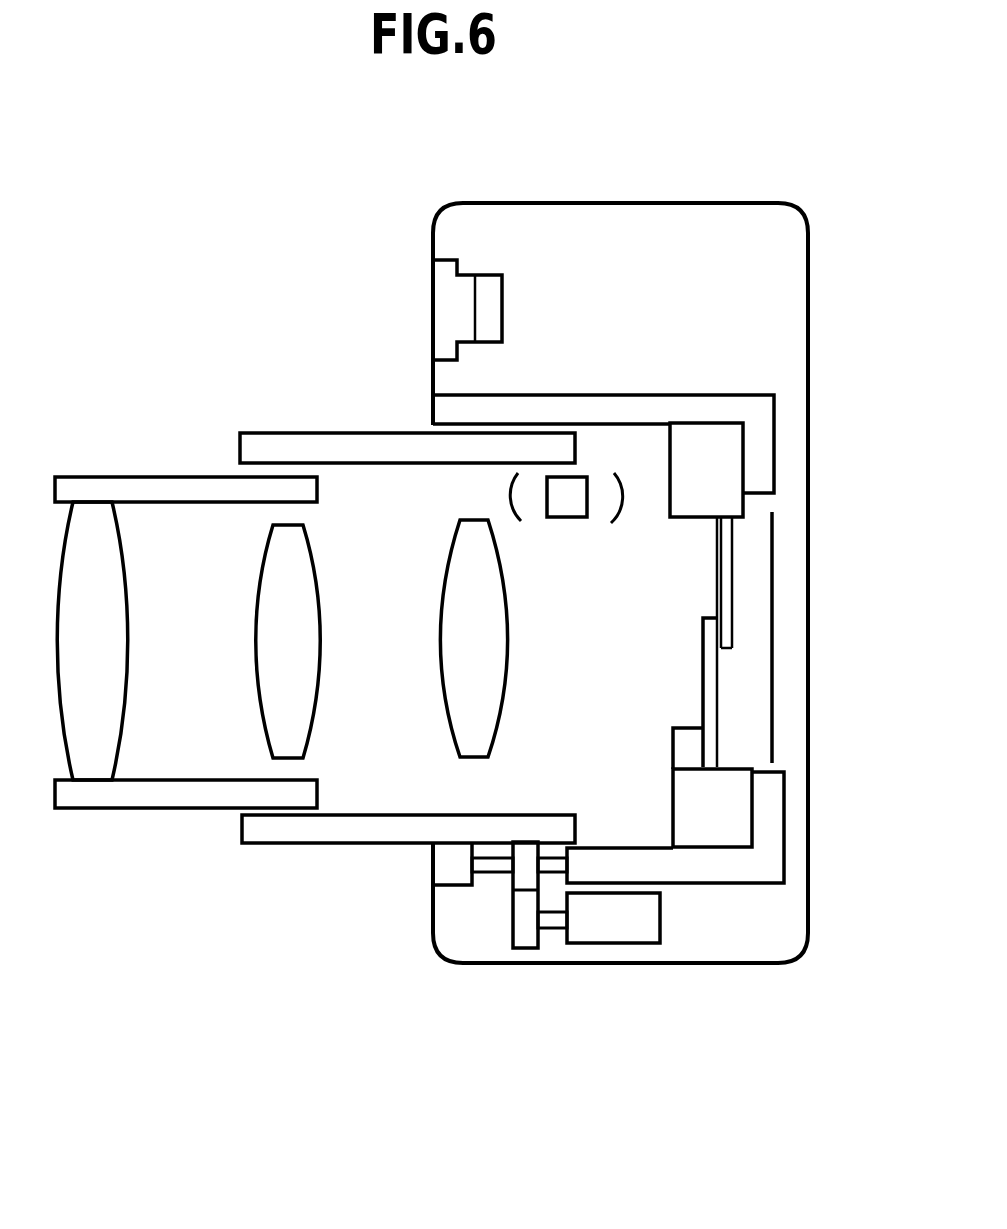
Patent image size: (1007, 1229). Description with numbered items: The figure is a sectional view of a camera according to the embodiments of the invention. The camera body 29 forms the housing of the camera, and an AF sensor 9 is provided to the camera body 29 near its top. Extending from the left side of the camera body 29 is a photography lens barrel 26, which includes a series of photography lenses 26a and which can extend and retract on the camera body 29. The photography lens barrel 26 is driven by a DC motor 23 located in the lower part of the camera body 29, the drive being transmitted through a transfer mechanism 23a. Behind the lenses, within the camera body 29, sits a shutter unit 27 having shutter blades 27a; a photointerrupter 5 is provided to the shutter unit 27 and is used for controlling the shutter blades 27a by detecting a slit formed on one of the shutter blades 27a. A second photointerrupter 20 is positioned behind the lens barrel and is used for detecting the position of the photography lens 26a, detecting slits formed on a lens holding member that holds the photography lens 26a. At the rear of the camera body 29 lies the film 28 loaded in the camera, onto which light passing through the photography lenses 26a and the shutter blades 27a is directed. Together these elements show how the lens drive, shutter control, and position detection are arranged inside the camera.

The camera body 29 is at (633, 203).
The AF sensor 9 is at (487, 275).
The photointerrupter 20 is at (578, 485).
The shutter unit 27 is at (668, 532).
The shutter blades 27a is at (720, 697).
The film 28 is at (772, 593).
The photointerrupter 5 is at (682, 753).
The photography lens barrel 26 is at (144, 477).
The photography lenses 26a is at (453, 733).
The DC motor 23 is at (615, 928).
The transfer mechanism 23a is at (518, 933).